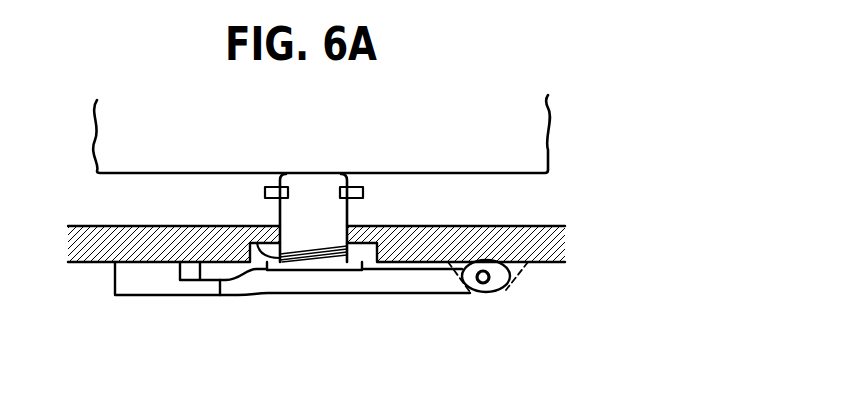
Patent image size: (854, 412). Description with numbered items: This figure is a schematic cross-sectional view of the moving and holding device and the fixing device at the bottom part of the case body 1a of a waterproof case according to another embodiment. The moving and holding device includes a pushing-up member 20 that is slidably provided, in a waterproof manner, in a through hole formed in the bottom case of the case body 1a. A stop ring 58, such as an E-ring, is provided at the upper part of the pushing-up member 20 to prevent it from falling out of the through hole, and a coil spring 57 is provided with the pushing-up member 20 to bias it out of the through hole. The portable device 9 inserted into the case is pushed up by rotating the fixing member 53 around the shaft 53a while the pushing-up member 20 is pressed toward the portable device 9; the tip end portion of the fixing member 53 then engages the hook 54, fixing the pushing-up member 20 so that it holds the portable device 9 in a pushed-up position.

The portable device 9 is at (527, 131).
The case body 1a is at (547, 243).
The pushing-up member 20 is at (314, 195).
The stop ring 58 is at (365, 189).
The coil spring 57 is at (262, 252).
The hook 54 is at (188, 285).
The fixing member 53 is at (327, 287).
The shaft 53a is at (483, 284).